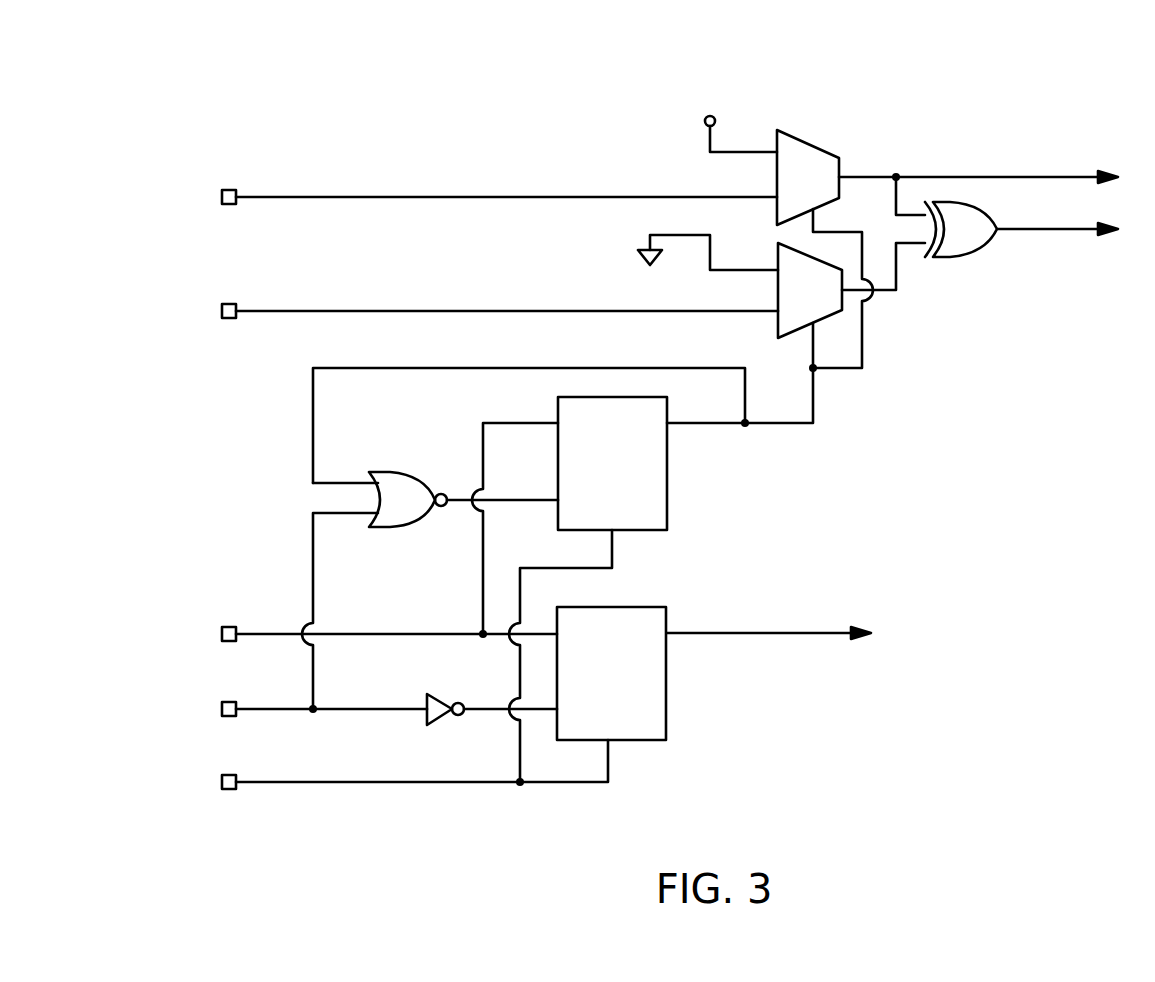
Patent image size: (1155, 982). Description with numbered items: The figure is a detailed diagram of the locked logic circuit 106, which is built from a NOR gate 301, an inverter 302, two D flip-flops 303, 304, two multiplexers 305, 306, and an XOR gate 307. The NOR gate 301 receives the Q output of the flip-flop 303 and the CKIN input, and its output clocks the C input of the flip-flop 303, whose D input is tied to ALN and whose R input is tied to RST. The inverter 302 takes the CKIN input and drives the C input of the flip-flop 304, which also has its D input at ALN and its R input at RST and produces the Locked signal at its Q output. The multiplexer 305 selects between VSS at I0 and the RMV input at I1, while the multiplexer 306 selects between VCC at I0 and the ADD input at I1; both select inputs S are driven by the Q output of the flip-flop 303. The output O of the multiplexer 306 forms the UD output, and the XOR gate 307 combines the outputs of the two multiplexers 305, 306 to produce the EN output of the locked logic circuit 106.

The locked logic circuit 106 is at (690, 50).
The NOR gate 301 is at (422, 520).
The inverter 302 is at (437, 716).
The D flip-flop 303 is at (667, 477).
The D flip-flop 304 is at (666, 704).
The multiplexer 305 is at (778, 327).
The multiplexer 306 is at (810, 145).
The XOR gate 307 is at (975, 253).